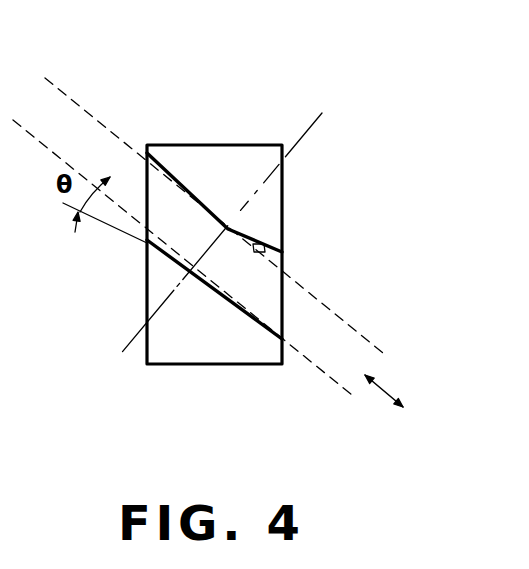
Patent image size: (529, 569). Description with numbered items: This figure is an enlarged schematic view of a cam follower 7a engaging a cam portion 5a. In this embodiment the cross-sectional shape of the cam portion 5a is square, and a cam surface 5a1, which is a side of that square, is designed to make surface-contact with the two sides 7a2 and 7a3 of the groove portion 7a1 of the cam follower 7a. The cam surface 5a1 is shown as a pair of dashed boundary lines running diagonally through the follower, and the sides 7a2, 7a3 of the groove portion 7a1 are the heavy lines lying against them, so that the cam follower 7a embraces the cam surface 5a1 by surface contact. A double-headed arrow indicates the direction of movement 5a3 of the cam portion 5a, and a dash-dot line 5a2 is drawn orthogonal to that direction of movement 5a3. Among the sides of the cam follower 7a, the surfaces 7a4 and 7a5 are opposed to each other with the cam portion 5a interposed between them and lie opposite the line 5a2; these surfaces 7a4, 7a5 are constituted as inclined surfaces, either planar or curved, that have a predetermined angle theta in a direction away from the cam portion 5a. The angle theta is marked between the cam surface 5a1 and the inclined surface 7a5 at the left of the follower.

The cam follower 7a is at (240, 160).
The groove portion 7a1 is at (263, 292).
The side of the groove portion 7a2 is at (180, 192).
The side of the groove portion 7a3 is at (244, 308).
The inclined surface 7a4 is at (257, 240).
The inclined surface 7a5 is at (150, 246).
The cam portion 5a is at (350, 342).
The cam surface 5a1 is at (86, 113).
The line orthogonal to the direction of movement 5a2 is at (302, 137).
The direction of movement 5a3 is at (384, 390).